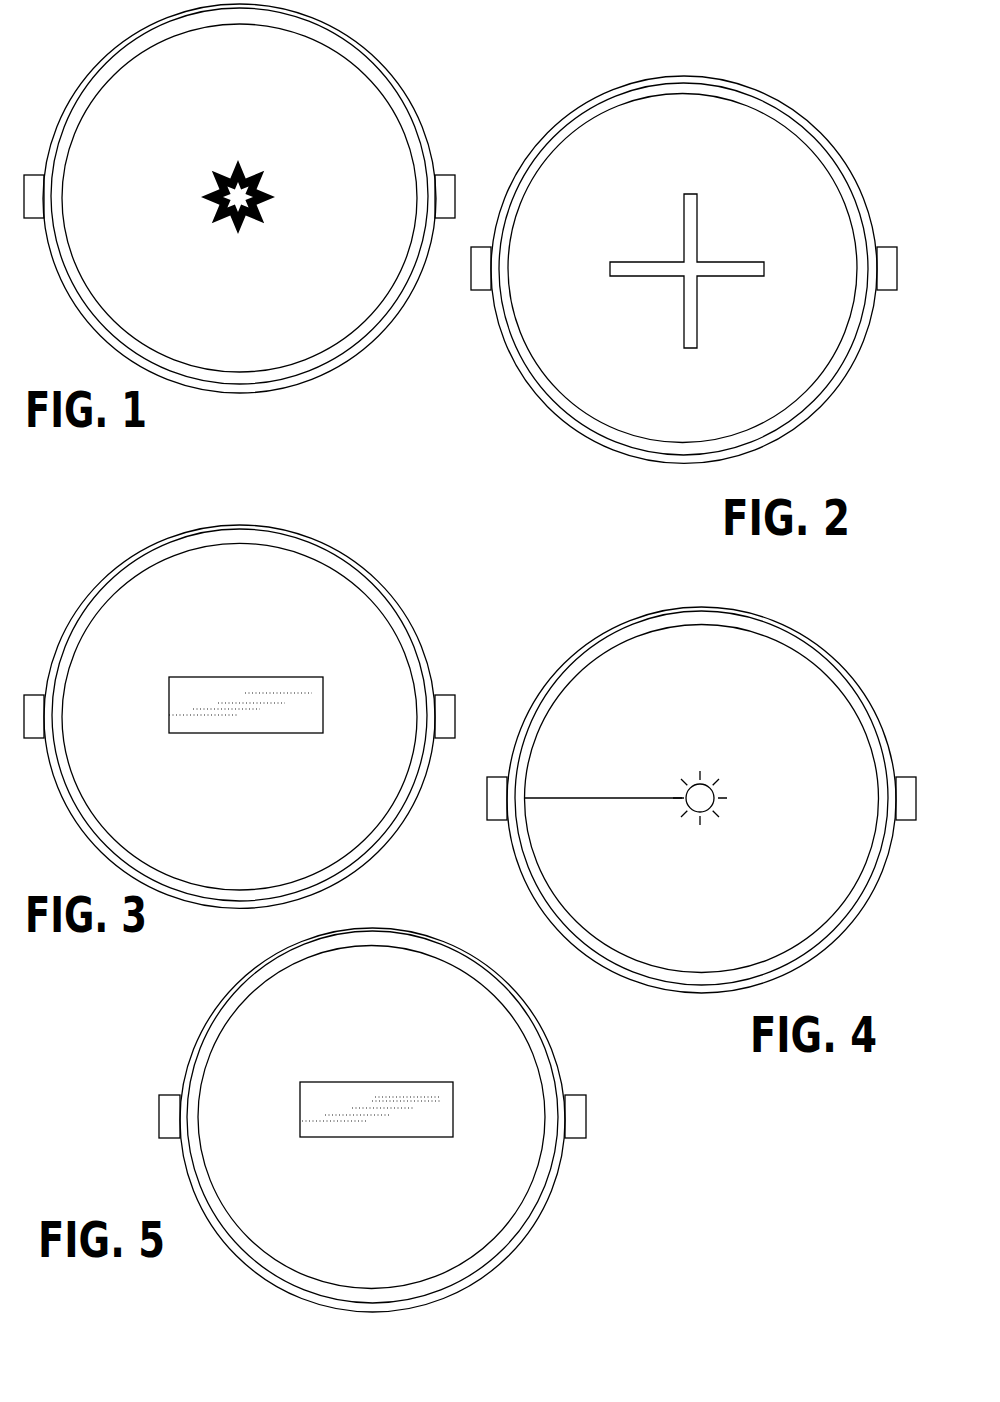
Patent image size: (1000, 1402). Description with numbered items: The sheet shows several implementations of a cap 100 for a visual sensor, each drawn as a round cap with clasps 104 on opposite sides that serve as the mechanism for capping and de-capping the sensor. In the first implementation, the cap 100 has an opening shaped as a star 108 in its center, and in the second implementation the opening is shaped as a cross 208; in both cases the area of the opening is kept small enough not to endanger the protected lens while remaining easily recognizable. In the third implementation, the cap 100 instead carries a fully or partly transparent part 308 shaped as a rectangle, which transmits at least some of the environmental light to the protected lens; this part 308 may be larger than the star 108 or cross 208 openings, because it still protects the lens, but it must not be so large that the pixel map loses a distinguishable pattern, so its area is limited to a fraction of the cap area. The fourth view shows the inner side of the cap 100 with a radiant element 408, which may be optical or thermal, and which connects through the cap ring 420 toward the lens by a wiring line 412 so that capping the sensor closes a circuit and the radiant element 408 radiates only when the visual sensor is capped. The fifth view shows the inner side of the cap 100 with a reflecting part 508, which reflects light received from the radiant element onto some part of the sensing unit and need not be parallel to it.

In FIG. 1, the cap 100 is at (352, 40).
In FIG. 2, the cap 100 is at (786, 118).
In FIG. 3, the cap 100 is at (348, 553).
In FIG. 4, the cap 100 is at (800, 638).
In FIG. 5, the cap 100 is at (398, 930).
In FIG. 1, the clasps 104 is at (33, 174).
In FIG. 2, the clasps 104 is at (481, 247).
In FIG. 3, the clasps 104 is at (33, 695).
In FIG. 4, the clasps 104 is at (488, 777).
In FIG. 5, the clasps 104 is at (172, 1095).
In FIG. 1, the star 108 is at (264, 190).
In FIG. 2, the cross 208 is at (700, 231).
In FIG. 3, the transparent part 308 is at (293, 677).
In FIG. 4, the radiant element 408 is at (716, 785).
In FIG. 4, the connecting line 412 is at (580, 797).
In FIG. 4, the cap ring 420 is at (529, 760).
In FIG. 5, the reflecting part 508 is at (425, 1082).